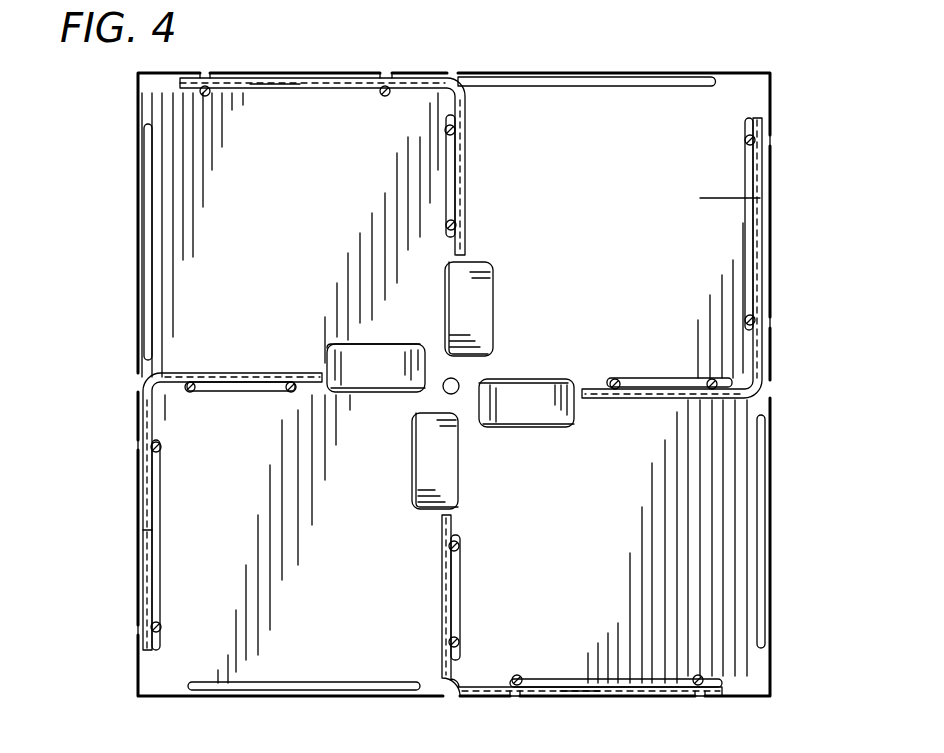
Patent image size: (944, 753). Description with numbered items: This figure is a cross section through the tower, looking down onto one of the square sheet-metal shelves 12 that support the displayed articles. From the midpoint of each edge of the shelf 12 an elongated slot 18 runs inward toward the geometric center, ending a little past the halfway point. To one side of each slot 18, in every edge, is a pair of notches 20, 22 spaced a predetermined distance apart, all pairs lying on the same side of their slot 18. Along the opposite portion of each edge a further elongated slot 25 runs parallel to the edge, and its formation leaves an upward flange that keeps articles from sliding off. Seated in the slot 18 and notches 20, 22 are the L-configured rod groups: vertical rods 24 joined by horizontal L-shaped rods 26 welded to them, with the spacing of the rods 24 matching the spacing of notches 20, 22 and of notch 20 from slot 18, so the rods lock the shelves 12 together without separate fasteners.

The shelf 12 is at (768, 95).
The elongated slot 18 is at (460, 66).
The notch 20 is at (386, 71).
The notch 22 is at (206, 71).
The vertically oriented rod 24 is at (832, 666).
The elongated slot 25 is at (705, 77).
The L-shaped rod 26 is at (283, 80).